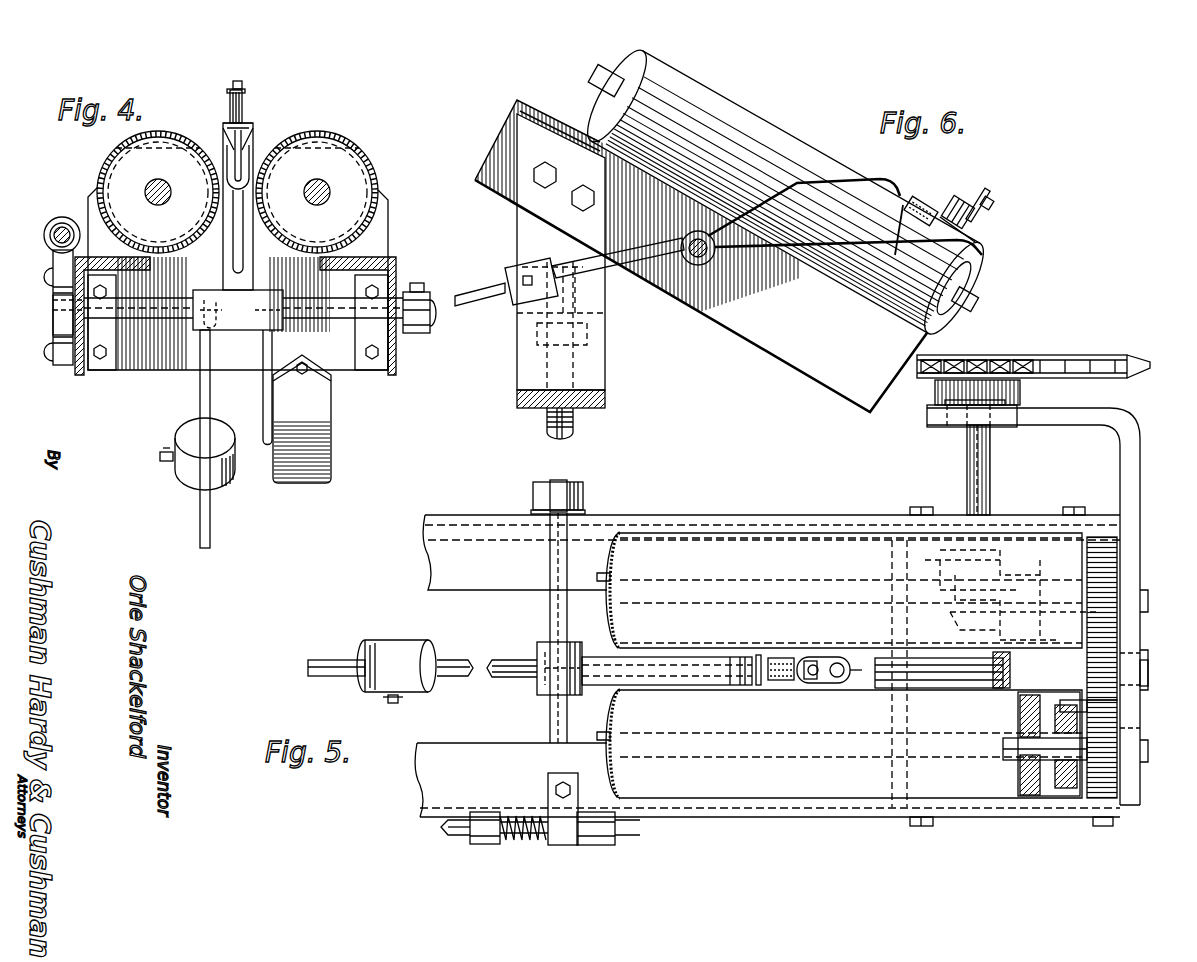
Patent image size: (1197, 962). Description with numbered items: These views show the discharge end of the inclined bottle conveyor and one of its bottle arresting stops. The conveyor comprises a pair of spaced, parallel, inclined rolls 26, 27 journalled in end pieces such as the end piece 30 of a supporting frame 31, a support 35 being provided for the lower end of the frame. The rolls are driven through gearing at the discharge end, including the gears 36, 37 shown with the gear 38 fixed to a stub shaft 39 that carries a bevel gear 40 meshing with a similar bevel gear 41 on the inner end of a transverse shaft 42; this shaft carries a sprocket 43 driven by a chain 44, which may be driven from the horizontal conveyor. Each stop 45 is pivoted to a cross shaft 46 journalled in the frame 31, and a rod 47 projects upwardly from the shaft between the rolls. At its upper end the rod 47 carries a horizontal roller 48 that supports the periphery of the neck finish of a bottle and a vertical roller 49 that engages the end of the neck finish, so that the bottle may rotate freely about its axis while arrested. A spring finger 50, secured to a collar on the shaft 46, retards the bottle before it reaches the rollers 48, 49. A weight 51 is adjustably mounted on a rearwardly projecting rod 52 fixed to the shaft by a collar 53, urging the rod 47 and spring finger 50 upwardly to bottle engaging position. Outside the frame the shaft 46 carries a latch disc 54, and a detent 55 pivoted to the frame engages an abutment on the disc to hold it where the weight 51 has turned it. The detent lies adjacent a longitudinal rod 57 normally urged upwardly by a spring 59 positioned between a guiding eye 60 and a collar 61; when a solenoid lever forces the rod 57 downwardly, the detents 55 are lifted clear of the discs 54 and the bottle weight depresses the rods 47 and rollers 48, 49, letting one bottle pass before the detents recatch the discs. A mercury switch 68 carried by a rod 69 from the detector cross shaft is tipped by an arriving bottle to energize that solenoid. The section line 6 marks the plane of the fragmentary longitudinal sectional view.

In FIG. 5, the section line 6 is at (310, 667).
In FIG. 4, the inclined roll 26 is at (105, 165).
In FIG. 5, the inclined roll 26 is at (695, 800).
In FIG. 4, the inclined roll 27 is at (372, 176).
In FIG. 6, the inclined roll 27 is at (782, 190).
In FIG. 5, the inclined roll 27 is at (700, 530).
In FIG. 5, the end piece 30 is at (1130, 458).
In FIG. 4, the supporting frame 31 is at (397, 263).
In FIG. 6, the supporting frame 31 is at (800, 360).
In FIG. 5, the supporting frame 31 is at (470, 513).
In FIG. 6, the support 35 is at (605, 368).
In FIG. 5, the gear 36 is at (1118, 733).
In FIG. 5, the gear 37 is at (1118, 574).
In FIG. 5, the gear 38 is at (1108, 668).
In FIG. 5, the stub shaft 39 is at (1150, 672).
In FIG. 5, the bevel gear 40 is at (1000, 690).
In FIG. 5, the bevel gear 41 is at (958, 628).
In FIG. 5, the transverse shaft 42 is at (990, 478).
In FIG. 5, the sprocket 43 is at (1022, 353).
In FIG. 5, the chain 44 is at (1115, 358).
In FIG. 4, the stop 45 is at (260, 87).
In FIG. 6, the stop 45 is at (1003, 205).
In FIG. 5, the stop 45 is at (809, 696).
In FIG. 4, the cross shaft 46 is at (407, 333).
In FIG. 6, the cross shaft 46 is at (700, 268).
In FIG. 5, the cross shaft 46 is at (548, 607).
In FIG. 6, the rod 47 is at (852, 243).
In FIG. 5, the rod 47 is at (758, 685).
In FIG. 4, the horizontal roller 48 is at (250, 140).
In FIG. 6, the horizontal roller 48 is at (915, 200).
In FIG. 5, the horizontal roller 48 is at (778, 657).
In FIG. 4, the vertical roller 49 is at (248, 96).
In FIG. 6, the vertical roller 49 is at (953, 200).
In FIG. 5, the vertical roller 49 is at (812, 655).
In FIG. 4, the spring finger 50 is at (223, 128).
In FIG. 6, the spring finger 50 is at (827, 180).
In FIG. 5, the spring finger 50 is at (587, 653).
In FIG. 4, the weight 51 is at (180, 478).
In FIG. 6, the weight 51 is at (507, 272).
In FIG. 5, the weight 51 is at (395, 640).
In FIG. 4, the rearwardly projecting rod 52 is at (201, 399).
In FIG. 6, the rearwardly projecting rod 52 is at (600, 278).
In FIG. 5, the rearwardly projecting rod 52 is at (466, 655).
In FIG. 4, the collar 53 is at (212, 331).
In FIG. 4, the latch disc 54 is at (53, 328).
In FIG. 4, the detent 55 is at (53, 268).
In FIG. 4, the longitudinal rod 57 is at (46, 237).
In FIG. 5, the longitudinal rod 57 is at (448, 826).
In FIG. 5, the spring 59 is at (516, 812).
In FIG. 5, the guiding eye 60 is at (590, 812).
In FIG. 5, the collar 61 is at (482, 812).
In FIG. 4, the mercury switch 68 is at (333, 395).
In FIG. 4, the rod 69 is at (274, 352).